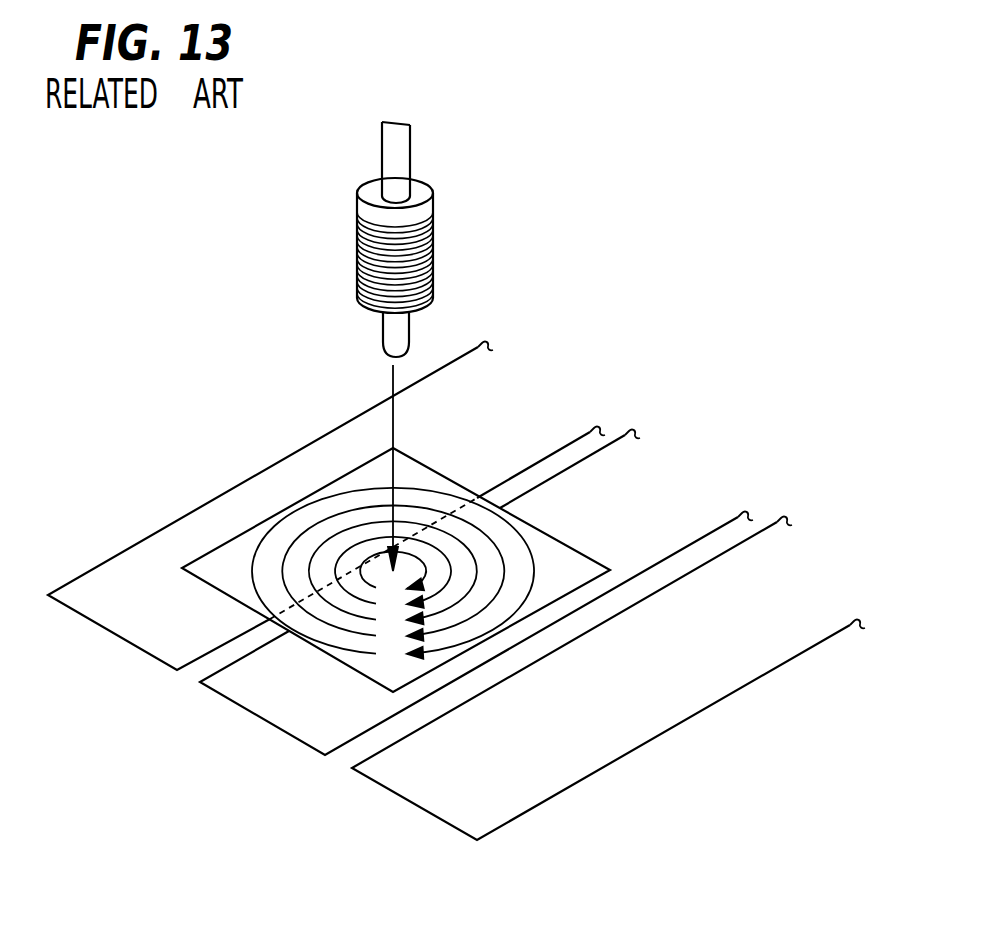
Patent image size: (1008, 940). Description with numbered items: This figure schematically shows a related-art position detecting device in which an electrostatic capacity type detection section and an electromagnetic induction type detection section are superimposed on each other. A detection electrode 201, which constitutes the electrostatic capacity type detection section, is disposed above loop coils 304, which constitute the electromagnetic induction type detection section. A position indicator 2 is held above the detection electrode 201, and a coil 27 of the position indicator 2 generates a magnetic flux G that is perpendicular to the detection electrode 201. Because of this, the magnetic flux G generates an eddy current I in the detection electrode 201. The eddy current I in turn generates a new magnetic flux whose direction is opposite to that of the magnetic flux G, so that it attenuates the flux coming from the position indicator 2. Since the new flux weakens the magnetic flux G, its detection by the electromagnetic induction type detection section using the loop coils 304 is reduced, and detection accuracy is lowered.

The position indicator 2 is at (442, 239).
The coil 27 is at (446, 203).
The magnetic flux G is at (392, 382).
The eddy current I is at (416, 493).
The detection electrode 201 is at (562, 542).
The loop coils 304 is at (135, 648).